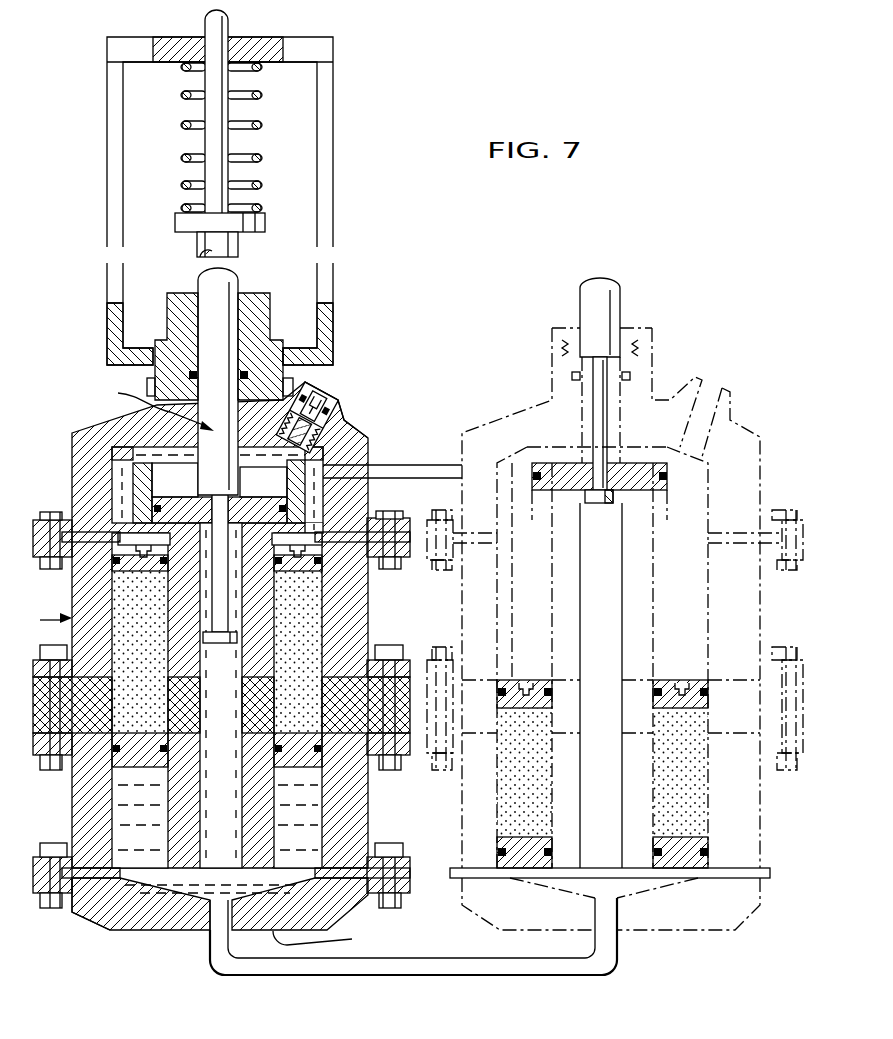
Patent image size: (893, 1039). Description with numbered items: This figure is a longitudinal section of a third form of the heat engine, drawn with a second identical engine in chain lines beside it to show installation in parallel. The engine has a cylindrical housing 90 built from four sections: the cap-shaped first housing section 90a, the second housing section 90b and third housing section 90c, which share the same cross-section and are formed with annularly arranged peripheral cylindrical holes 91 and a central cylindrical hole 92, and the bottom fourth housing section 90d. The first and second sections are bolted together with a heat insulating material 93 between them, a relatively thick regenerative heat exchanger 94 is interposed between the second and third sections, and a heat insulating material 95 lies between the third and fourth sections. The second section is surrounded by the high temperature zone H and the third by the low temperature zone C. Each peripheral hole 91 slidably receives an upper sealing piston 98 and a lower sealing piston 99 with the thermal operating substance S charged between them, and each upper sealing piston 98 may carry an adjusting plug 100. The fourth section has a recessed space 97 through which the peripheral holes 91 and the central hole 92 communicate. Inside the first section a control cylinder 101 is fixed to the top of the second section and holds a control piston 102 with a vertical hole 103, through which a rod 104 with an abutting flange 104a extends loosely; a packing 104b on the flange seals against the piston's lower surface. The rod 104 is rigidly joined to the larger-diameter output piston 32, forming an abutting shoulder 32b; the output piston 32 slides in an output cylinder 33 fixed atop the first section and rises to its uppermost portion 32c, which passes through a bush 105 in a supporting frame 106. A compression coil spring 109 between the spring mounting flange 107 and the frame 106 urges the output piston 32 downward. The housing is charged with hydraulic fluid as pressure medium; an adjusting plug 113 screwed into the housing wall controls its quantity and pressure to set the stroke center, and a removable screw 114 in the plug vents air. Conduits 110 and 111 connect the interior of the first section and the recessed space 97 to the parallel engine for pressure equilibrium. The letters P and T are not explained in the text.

The bush 105 is at (181, 38).
The uppermost portion 32c is at (222, 27).
The supporting frame 106 is at (111, 162).
The compression coil spring 109 is at (188, 125).
The spring mounting flange 107 is at (288, 216).
The output cylinder 33 is at (172, 308).
The output piston 32 is at (238, 299).
The pressure port P is at (158, 406).
The cylindrical housing 90 is at (186, 625).
The first housing section 90a is at (72, 440).
The second housing section 90b is at (72, 593).
The third housing section 90c is at (80, 790).
The fourth housing section 90d is at (129, 918).
The tank port T is at (48, 621).
The peripheral cylindrical holes 91 is at (114, 638).
The regenerative heat exchanger 94 is at (36, 700).
The heat insulating material 95 is at (76, 908).
The central cylindrical hole 92 is at (200, 840).
The recessed space 97 is at (305, 940).
The conduit 111 is at (428, 968).
The lower sealing piston 99 is at (144, 766).
The upper sealing piston 98 is at (160, 578).
The rod 104 is at (252, 655).
The abutting flange 104a is at (240, 655).
The packing 104b is at (204, 636).
The vertical hole 103 is at (221, 661).
The abutting shoulder 32b is at (217, 490).
The control piston 102 is at (272, 503).
The heat insulating material 93 is at (378, 522).
The adjusting plug 100 is at (348, 465).
The control cylinder 101 is at (345, 434).
The adjusting plug 113 is at (336, 395).
The removable screw 114 is at (322, 386).
The conduit 110 is at (452, 465).
The high temperature zone H is at (414, 612).
The low temperature zone C is at (416, 822).
The thermal operating substance S is at (306, 654).